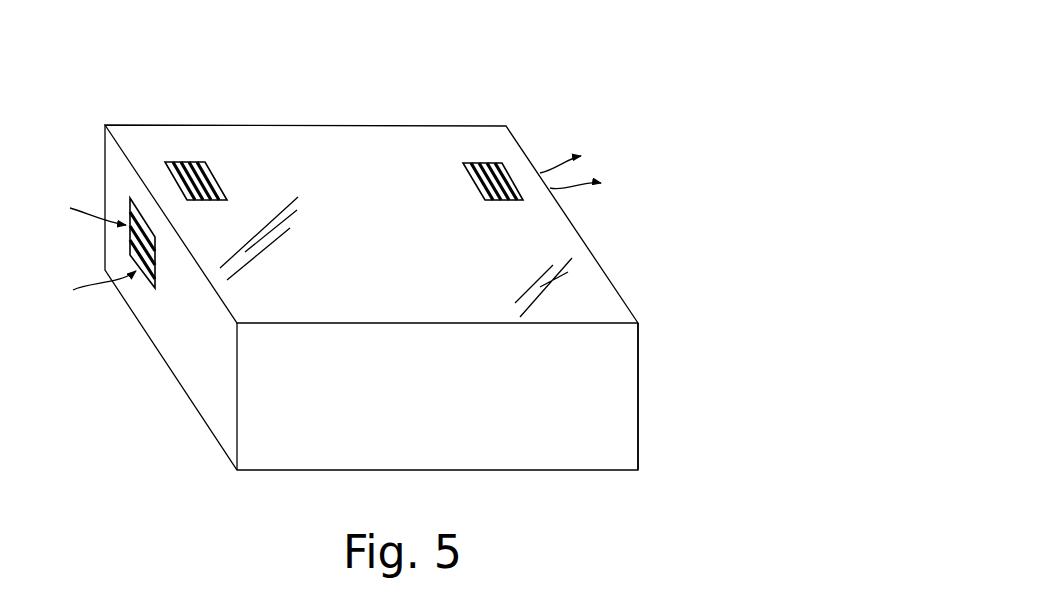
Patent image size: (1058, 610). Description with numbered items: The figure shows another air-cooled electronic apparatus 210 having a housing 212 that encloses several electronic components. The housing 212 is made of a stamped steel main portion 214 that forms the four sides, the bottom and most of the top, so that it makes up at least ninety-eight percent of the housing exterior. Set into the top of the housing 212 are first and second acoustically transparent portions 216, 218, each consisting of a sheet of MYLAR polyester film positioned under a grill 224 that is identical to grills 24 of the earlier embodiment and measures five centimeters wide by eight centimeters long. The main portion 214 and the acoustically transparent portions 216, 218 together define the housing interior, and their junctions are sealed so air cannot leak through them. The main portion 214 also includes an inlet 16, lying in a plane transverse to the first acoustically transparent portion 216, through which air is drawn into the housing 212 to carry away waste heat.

The air-cooled electronic apparatus 210 is at (424, 246).
The housing 212 is at (455, 297).
The main portion 214 is at (642, 405).
The first acoustically transparent portion 216 is at (222, 169).
The second acoustically transparent portion 218 is at (471, 154).
The grill 224 is at (383, 131).
The inlet 16 is at (99, 267).
The grill 24 is at (146, 298).